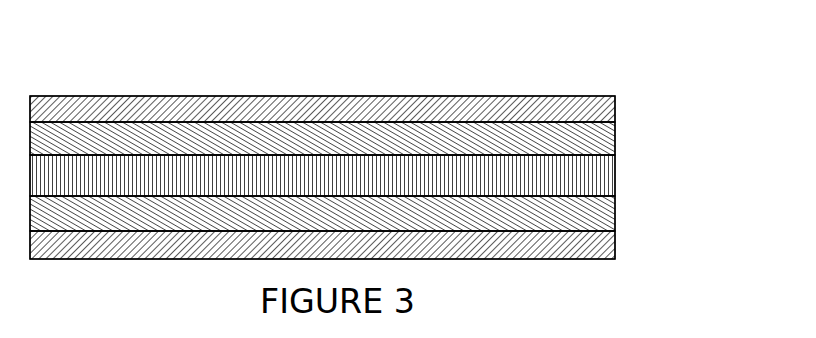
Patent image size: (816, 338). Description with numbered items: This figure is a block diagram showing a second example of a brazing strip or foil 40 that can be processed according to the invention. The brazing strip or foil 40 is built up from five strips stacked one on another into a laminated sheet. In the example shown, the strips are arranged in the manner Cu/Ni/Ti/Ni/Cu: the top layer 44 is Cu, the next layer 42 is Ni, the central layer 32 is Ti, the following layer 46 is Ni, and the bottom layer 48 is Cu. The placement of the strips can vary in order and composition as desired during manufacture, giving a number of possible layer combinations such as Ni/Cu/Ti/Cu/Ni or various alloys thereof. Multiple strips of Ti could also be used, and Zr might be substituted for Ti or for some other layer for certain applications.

The brazing strip or foil 40 is at (327, 70).
The layer 44 is at (616, 109).
The layer 42 is at (617, 139).
The layer 32 is at (616, 177).
The layer 46 is at (617, 213).
The layer 48 is at (617, 250).